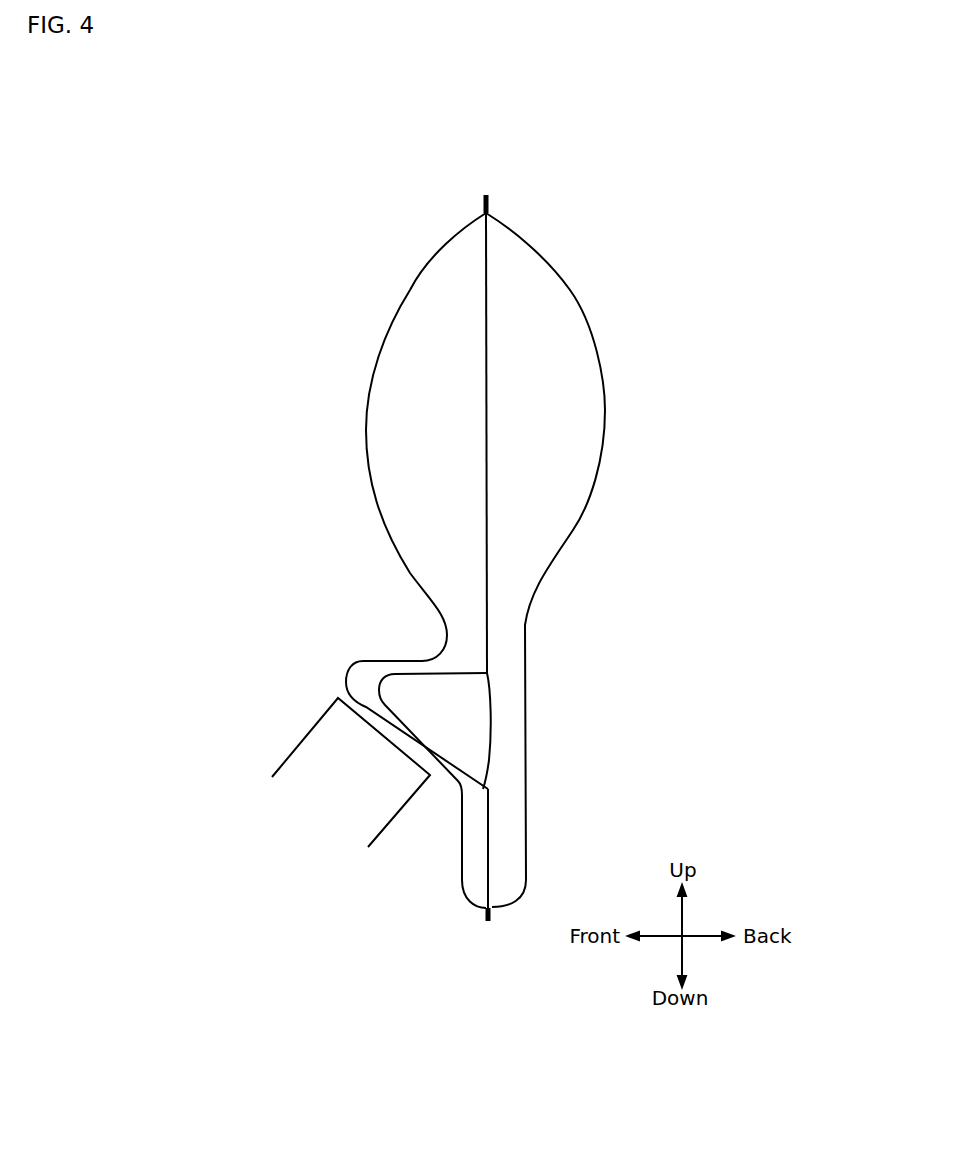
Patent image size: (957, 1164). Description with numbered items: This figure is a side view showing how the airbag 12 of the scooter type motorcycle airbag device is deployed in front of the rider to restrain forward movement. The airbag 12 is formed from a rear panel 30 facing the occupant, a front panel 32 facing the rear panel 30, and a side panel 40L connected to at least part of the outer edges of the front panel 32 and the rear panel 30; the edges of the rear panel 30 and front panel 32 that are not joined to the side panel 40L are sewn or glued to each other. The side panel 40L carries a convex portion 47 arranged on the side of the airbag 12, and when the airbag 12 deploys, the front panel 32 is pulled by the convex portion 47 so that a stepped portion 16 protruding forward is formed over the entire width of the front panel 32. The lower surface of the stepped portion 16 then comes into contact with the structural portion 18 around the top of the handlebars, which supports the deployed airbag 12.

The airbag 12 is at (433, 536).
The rear panel 30 is at (570, 292).
The front panel 32 is at (373, 362).
The stepped portion 16 is at (360, 666).
The convex portion 47 is at (398, 686).
The structural portion 18 is at (343, 680).
The side panel 40L is at (473, 707).